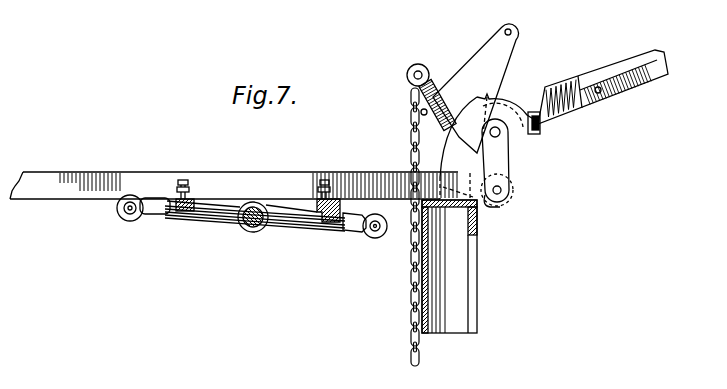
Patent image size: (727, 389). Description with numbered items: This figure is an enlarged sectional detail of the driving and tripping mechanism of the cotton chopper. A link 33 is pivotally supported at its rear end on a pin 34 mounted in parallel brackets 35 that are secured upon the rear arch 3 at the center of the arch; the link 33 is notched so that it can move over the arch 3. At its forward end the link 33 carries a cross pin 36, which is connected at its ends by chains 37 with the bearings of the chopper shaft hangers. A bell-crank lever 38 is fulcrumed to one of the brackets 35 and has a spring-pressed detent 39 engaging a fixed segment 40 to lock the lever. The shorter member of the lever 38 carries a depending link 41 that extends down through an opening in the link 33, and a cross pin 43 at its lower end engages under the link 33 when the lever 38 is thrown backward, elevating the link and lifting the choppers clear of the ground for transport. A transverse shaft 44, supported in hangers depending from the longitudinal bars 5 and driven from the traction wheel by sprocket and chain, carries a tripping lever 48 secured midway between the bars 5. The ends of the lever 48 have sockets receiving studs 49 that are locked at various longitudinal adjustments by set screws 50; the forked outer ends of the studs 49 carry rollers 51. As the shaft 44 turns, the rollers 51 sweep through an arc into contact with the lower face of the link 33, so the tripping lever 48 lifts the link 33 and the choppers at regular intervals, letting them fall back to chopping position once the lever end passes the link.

The rear arch 3 is at (467, 256).
The longitudinal bars 5 is at (108, 177).
The link 33 is at (438, 72).
The pin 34 is at (500, 205).
The brackets 35 is at (511, 187).
The cross pin 36 is at (415, 66).
The chains 37 is at (413, 284).
The bell-crank lever 38 is at (506, 70).
The spring-pressed detent 39 is at (538, 128).
The fixed segment 40 is at (515, 143).
The depending link 41 is at (487, 95).
The cross pin 43 is at (412, 110).
The transverse shaft 44 is at (255, 228).
The tripping lever 48 is at (207, 226).
The studs 49 is at (160, 216).
The set screws 50 is at (183, 180).
The rollers 51 is at (123, 218).